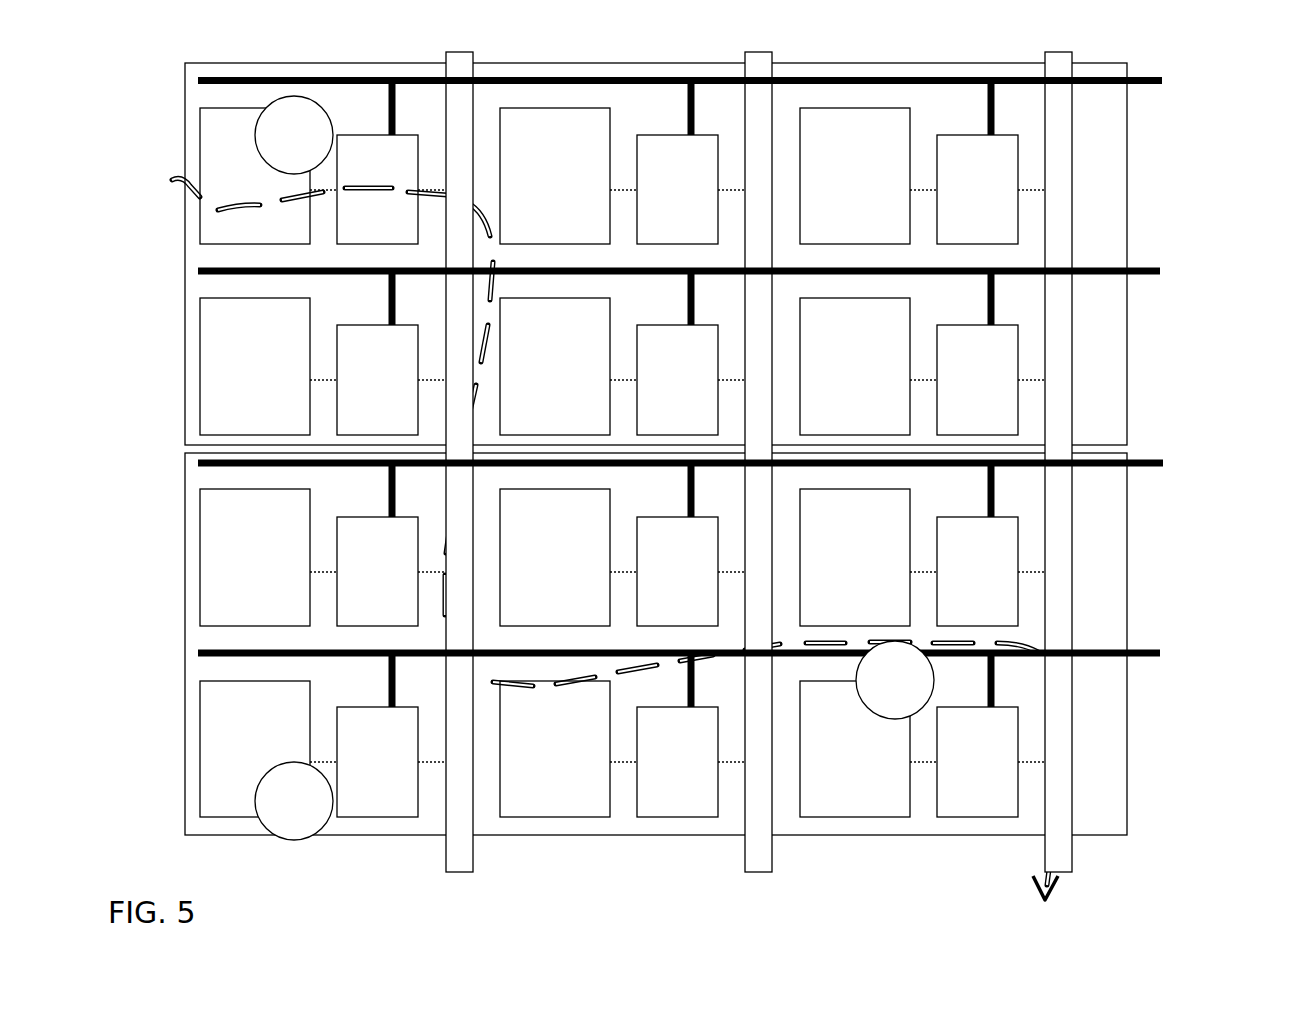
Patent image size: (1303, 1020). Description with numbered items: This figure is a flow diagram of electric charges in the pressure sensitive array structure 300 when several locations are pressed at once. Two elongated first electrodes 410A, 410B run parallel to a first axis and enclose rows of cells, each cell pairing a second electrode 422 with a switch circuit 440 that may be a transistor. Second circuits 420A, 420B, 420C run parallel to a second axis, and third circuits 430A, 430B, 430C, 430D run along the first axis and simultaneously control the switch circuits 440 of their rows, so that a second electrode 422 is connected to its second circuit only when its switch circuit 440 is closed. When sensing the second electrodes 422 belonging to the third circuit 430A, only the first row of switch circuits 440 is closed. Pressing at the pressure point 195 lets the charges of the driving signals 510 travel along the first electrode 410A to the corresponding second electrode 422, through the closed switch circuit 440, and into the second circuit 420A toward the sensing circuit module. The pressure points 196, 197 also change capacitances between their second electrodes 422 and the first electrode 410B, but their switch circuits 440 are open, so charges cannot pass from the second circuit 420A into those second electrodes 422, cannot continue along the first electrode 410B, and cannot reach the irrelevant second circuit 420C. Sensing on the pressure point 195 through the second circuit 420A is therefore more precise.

The pressure sensitive array structure 300 is at (1253, 63).
The first electrode 410A is at (582, 63).
The first electrode 410B is at (582, 835).
The second circuit 420A is at (462, 874).
The second circuit 420B is at (763, 874).
The second circuit 420C is at (1062, 874).
The third circuit 430A is at (1162, 84).
The third circuit 430B is at (1160, 275).
The third circuit 430C is at (1163, 467).
The third circuit 430D is at (1160, 657).
The second electrode 422 is at (238, 186).
The switch circuit 440 is at (360, 200).
The pressure point 195 is at (276, 145).
The pressure point 196 is at (276, 811).
The pressure point 197 is at (877, 690).
The driving signals 510 is at (187, 207).